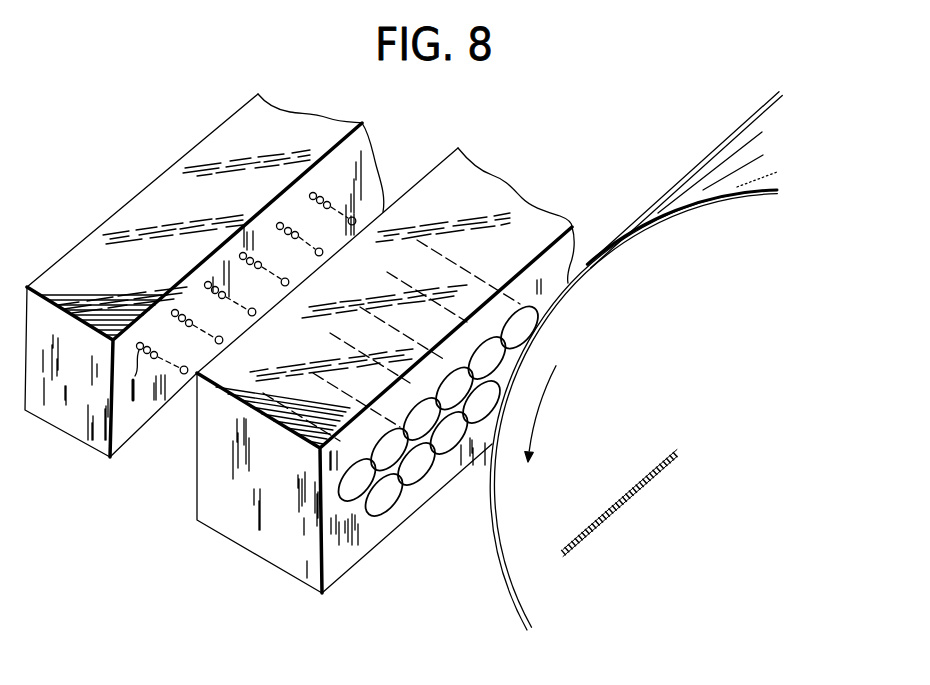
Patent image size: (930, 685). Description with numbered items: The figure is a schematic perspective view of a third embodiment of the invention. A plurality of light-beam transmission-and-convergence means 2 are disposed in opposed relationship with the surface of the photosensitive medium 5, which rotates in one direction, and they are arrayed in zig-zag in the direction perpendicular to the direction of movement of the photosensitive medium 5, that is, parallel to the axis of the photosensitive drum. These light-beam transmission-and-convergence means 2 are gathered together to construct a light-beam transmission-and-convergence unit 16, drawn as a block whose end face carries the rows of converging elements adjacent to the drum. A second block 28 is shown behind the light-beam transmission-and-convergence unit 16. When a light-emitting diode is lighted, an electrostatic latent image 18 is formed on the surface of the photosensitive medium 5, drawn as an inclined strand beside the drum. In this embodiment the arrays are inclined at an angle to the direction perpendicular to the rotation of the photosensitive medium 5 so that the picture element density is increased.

The roll of staple fiber 28 is at (65, 422).
The light-beam transmission-and-convergence unit 16 is at (255, 540).
The light-beam transmission-and-convergence means 2 is at (385, 498).
The photosensitive medium 5 is at (742, 137).
The electrostatic latent image 18 is at (572, 548).